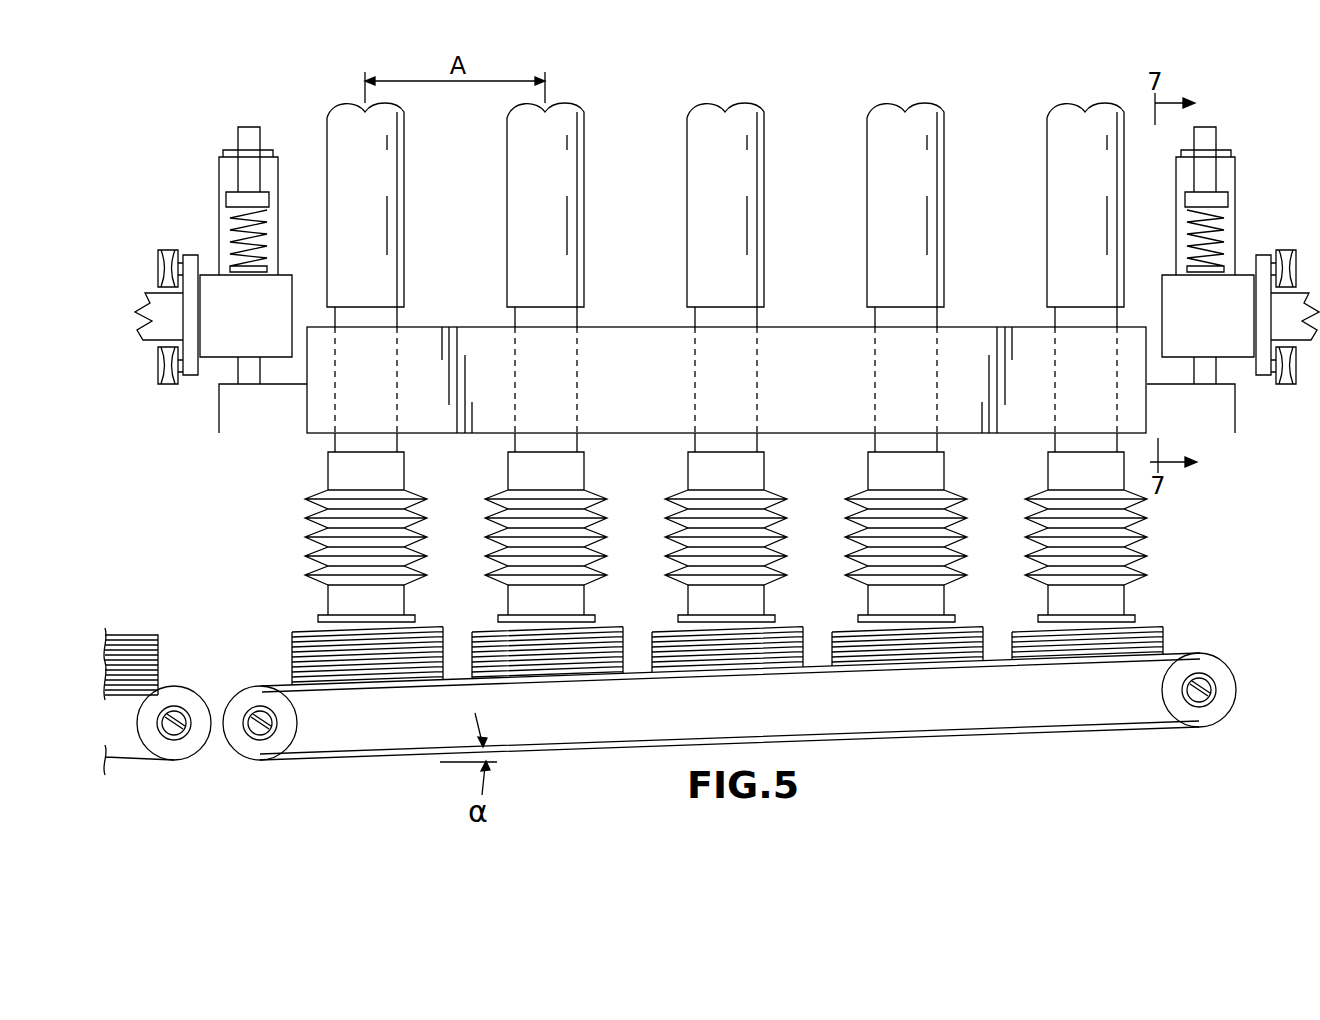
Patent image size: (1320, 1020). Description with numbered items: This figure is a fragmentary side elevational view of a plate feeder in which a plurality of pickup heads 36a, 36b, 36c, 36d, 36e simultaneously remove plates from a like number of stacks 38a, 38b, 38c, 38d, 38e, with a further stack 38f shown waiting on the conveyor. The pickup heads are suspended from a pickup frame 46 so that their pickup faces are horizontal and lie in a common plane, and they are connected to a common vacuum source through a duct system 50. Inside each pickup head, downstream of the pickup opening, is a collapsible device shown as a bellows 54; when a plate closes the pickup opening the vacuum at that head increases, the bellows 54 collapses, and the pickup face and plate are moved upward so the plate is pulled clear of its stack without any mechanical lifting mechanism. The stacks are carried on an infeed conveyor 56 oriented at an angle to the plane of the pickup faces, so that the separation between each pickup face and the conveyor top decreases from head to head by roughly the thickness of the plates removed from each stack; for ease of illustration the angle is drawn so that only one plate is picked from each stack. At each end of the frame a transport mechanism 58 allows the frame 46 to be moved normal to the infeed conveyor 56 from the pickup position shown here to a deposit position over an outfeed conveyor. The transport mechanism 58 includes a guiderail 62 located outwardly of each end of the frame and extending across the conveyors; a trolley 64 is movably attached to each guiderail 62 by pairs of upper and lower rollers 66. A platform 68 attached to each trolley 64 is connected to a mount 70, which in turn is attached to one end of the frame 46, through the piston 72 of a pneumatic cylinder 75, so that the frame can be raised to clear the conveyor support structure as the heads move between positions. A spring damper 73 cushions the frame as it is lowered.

The pickup head 36a is at (406, 600).
The pickup head 36b is at (586, 600).
The pickup head 36c is at (766, 600).
The pickup head 36d is at (946, 600).
The pickup head 36e is at (1126, 600).
The stack 38a is at (378, 673).
The stack 38b is at (556, 668).
The stack 38c is at (738, 660).
The stack 38d is at (915, 655).
The stack 38e is at (1096, 650).
The sheet stack 38f is at (146, 635).
The pickup frame 46 is at (820, 327).
The duct system 50 is at (404, 212).
The bellows 54 is at (430, 540).
The infeed conveyor 56 is at (1030, 735).
The transport mechanism 58 is at (1250, 192).
The guiderail 62 is at (150, 318).
The trolley 64 is at (190, 255).
The rollers 66 is at (160, 250).
The platform 68 is at (275, 288).
The mount 70 is at (232, 420).
The piston 72 is at (249, 368).
The spring damper 73 is at (268, 228).
The pneumatic cylinder 75 is at (218, 172).